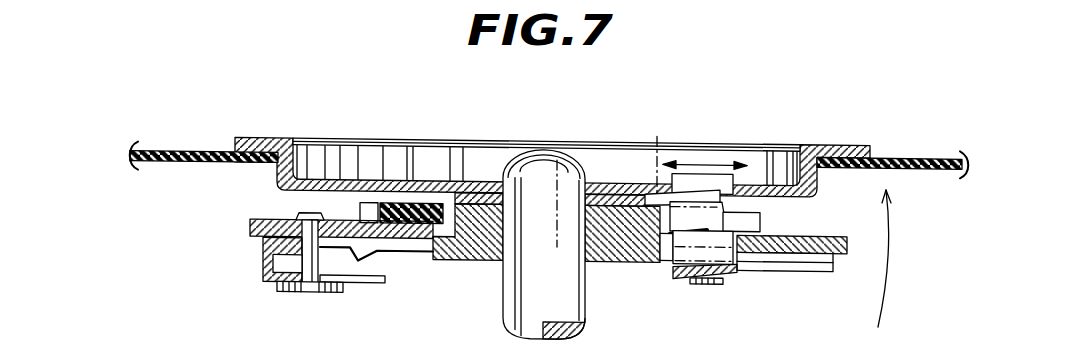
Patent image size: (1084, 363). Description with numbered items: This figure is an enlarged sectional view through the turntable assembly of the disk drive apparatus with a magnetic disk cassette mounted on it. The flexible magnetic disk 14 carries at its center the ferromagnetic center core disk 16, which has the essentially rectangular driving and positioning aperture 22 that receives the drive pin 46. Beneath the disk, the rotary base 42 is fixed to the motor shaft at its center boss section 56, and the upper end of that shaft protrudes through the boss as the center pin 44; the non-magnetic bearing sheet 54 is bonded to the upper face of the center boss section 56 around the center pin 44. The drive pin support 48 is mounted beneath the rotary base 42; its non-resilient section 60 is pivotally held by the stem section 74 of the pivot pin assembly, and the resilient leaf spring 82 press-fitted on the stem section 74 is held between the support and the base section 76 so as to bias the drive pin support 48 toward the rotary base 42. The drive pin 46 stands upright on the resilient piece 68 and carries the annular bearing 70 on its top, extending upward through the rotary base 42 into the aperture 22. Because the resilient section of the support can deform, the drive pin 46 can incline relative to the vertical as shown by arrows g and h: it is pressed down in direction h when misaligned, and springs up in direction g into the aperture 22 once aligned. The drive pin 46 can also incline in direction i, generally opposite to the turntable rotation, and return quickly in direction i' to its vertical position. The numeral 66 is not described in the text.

The flexible magnetic disk 14 is at (897, 150).
The center core disk 16 is at (786, 142).
The driving and positioning aperture 22 is at (655, 135).
The rotary base 42 is at (478, 252).
The center pin 44 is at (556, 213).
The drive pin 46 is at (693, 233).
The drive pin support 48 is at (263, 240).
The bearing sheet 54 is at (490, 188).
The center boss section 56 is at (465, 188).
The non-resilient section 60 is at (403, 244).
The support plate 66 is at (810, 266).
The resilient piece 68 is at (723, 266).
The annular bearing 70 is at (722, 168).
The stem section 74 is at (305, 238).
The base section 76 is at (303, 295).
The resilient leaf spring 82 is at (268, 267).
The direction of inclination of drive pin i is at (689, 105).
The direction of return of drive pin i' is at (757, 121).
The direction of pivotal movement of drive pin g is at (893, 221).
The direction of pivotal movement of drive pin h is at (889, 291).